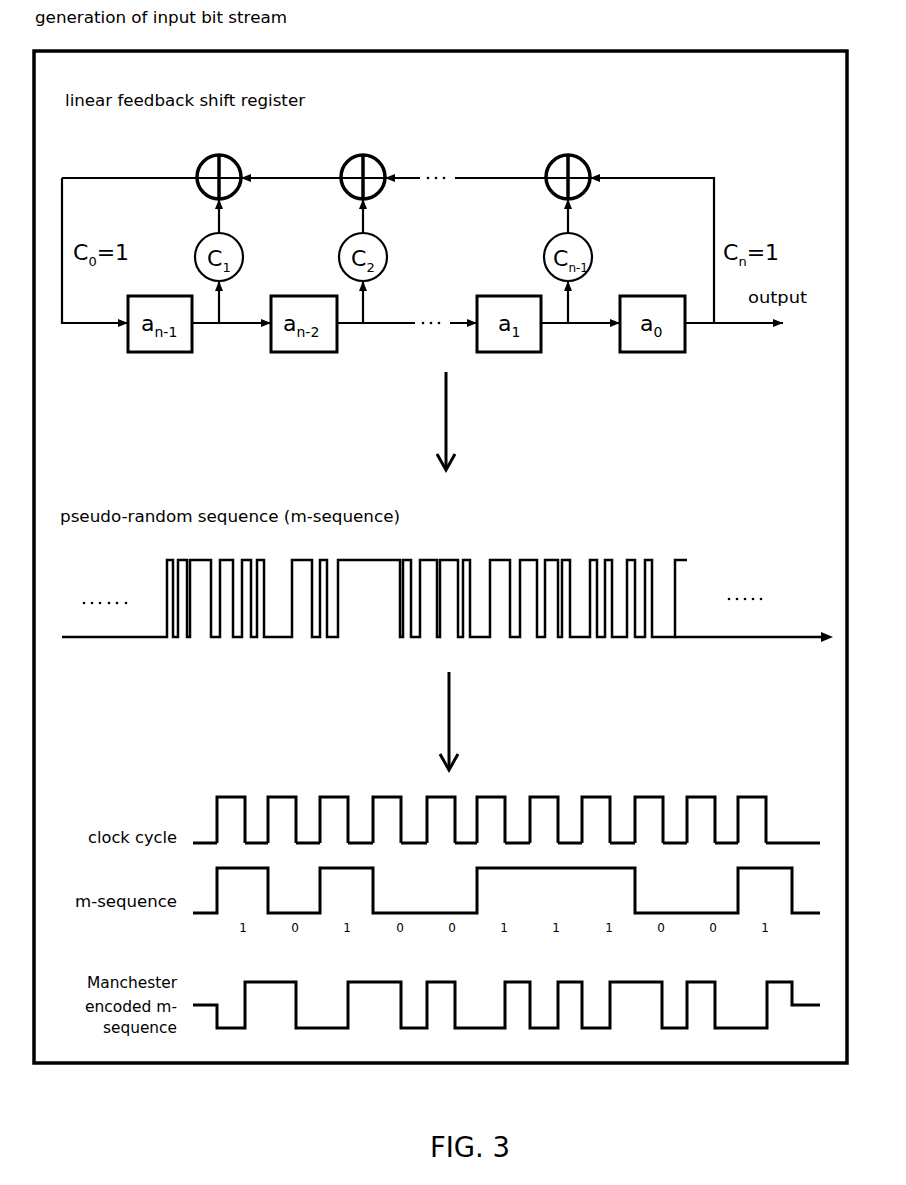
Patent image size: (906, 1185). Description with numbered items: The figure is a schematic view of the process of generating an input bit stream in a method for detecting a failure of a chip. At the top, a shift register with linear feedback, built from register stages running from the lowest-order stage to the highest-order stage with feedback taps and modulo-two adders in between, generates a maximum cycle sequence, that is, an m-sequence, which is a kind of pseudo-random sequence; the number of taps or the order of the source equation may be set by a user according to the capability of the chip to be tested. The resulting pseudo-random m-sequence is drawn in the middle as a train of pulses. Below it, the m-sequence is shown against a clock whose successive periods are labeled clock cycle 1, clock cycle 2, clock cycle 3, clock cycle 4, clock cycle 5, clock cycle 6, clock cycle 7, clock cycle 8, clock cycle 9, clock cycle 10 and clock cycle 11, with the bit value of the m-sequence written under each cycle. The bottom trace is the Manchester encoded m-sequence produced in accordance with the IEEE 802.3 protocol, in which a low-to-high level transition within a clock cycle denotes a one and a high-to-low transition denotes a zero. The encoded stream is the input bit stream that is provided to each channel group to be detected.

The clock cycle 1 is at (231, 820).
The clock cycle 2 is at (282, 820).
The clock cycle 3 is at (334, 820).
The clock cycle 4 is at (387, 820).
The clock cycle 5 is at (441, 820).
The clock cycle 6 is at (491, 820).
The clock cycle 7 is at (544, 820).
The clock cycle 8 is at (596, 820).
The clock cycle 9 is at (649, 820).
The clock cycle 10 is at (701, 820).
The clock cycle 11 is at (752, 820).